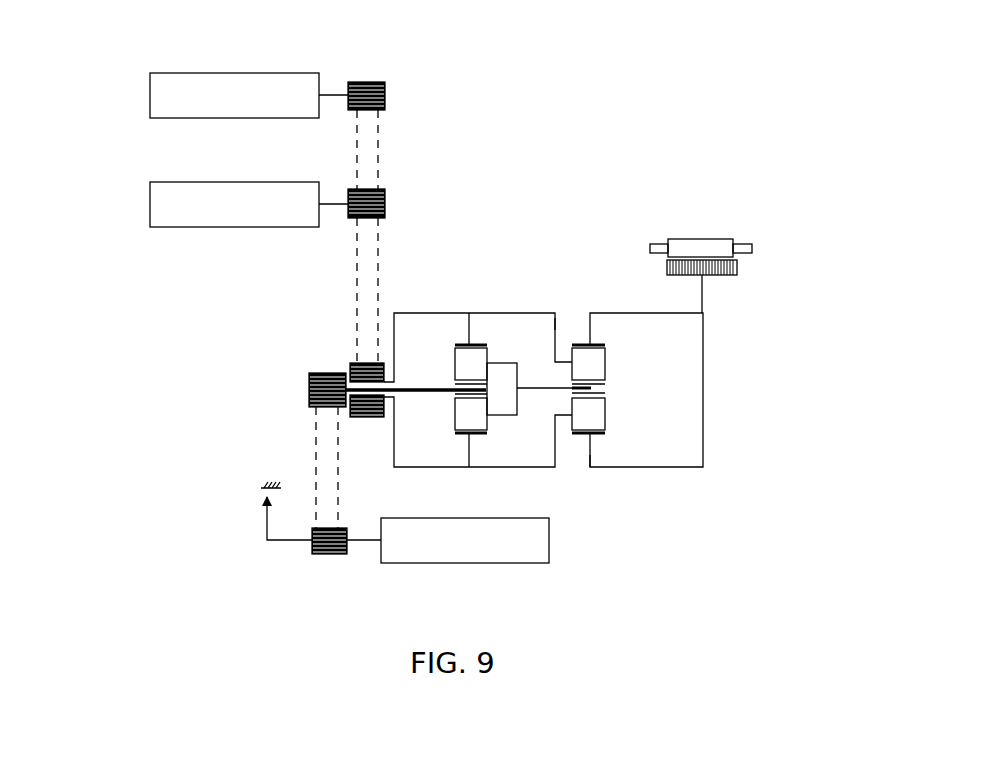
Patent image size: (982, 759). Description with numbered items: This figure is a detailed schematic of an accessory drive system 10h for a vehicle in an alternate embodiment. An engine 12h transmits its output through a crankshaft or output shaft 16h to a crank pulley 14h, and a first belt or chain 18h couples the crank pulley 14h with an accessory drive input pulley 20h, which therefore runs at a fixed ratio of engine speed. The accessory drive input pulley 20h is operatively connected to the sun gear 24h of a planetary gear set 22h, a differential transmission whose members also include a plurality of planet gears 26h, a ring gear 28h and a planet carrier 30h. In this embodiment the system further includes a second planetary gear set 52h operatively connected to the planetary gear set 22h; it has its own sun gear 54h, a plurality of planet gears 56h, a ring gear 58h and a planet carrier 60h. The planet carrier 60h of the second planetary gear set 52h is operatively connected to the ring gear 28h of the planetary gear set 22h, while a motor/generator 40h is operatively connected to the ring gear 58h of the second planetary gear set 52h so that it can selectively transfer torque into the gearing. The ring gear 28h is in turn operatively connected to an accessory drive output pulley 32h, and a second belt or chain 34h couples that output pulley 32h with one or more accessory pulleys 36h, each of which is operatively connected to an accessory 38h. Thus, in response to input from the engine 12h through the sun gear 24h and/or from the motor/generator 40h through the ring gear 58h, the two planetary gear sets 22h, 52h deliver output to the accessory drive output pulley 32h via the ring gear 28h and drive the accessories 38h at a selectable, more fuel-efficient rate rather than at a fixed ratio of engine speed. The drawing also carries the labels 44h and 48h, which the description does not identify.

The accessory drive system 10h is at (658, 119).
The engine 12h is at (517, 564).
The crank pulley 14h is at (323, 557).
The output shaft 16h is at (363, 542).
The first belt or chain 18h is at (313, 487).
The accessory drive input pulley 20h is at (310, 377).
The planetary gear set 22h is at (521, 478).
The sun gear 24h is at (453, 383).
The planet gears 26h is at (482, 355).
The ring gear 28h is at (462, 343).
The planet carrier 30h is at (513, 414).
The accessory drive output pulley 32h is at (355, 362).
The second belt or chain 34h is at (383, 277).
The accessory pulleys 36h is at (373, 82).
The accessory 38h is at (158, 73).
The motor/generator 40h is at (718, 234).
The brake 44h is at (260, 492).
The ground 48h is at (261, 470).
The second planetary gear set 52h is at (646, 480).
The sun gear 54h is at (603, 388).
The planet gears 56h is at (593, 360).
The ring gear 58h is at (590, 343).
The planet carrier 60h is at (558, 323).